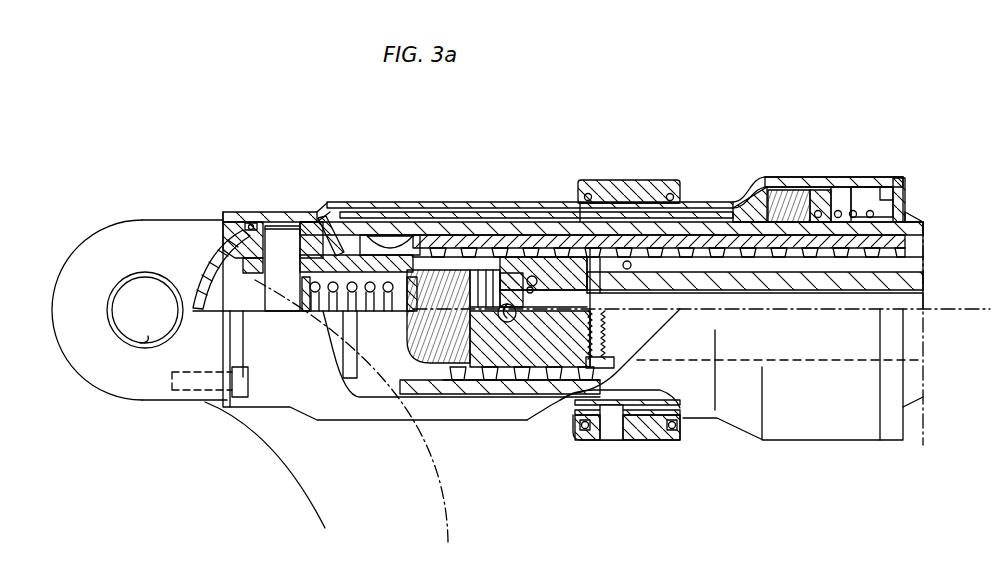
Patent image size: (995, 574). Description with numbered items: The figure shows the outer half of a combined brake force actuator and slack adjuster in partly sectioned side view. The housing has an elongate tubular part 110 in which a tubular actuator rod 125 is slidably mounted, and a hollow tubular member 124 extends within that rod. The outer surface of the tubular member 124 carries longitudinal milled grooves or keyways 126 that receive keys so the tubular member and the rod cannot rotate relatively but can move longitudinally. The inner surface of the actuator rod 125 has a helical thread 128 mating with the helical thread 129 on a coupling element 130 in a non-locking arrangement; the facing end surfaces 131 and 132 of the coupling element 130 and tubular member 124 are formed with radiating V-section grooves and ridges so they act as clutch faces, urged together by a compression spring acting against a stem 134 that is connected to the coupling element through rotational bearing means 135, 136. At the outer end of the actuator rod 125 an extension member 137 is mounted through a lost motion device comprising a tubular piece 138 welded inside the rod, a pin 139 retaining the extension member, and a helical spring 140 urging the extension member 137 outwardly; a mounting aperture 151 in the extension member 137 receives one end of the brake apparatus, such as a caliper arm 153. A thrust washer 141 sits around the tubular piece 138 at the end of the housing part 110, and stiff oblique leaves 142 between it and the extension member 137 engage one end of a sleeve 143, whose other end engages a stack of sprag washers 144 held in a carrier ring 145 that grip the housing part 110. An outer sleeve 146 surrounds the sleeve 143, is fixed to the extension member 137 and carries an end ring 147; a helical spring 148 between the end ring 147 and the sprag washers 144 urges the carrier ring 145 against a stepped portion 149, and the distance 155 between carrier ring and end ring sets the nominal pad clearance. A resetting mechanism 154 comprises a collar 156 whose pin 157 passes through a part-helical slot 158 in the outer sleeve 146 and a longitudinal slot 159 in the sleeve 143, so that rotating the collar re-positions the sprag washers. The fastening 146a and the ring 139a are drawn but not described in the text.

The elongate tubular part 110 is at (925, 223).
The hollow tubular member 124 is at (880, 283).
The tubular actuator rod 125 is at (572, 200).
The milled grooves or keyways 126 is at (817, 263).
The helical thread 128 is at (495, 225).
The mating helical thread 129 is at (540, 245).
The coupling element 130 is at (503, 382).
The end surface 131 is at (537, 400).
The end surface 132 is at (600, 350).
The stem 134 is at (767, 302).
The rotational bearing means 135 is at (497, 306).
The rotational bearing means 136 is at (603, 331).
The extension member 137 is at (95, 247).
The tubular piece 138 is at (390, 238).
The pin 139 is at (283, 242).
The sealing ring 139a is at (310, 207).
The helical spring 140 is at (380, 312).
The thrust washer 141 is at (340, 226).
The leaves 142 is at (331, 208).
The sleeve 143 is at (432, 204).
The sprag washers or shims 144 is at (772, 188).
The carrier ring 145 is at (778, 193).
The outer sleeve 146 is at (483, 207).
The locking screw 146a is at (248, 380).
The end ring 147 is at (907, 167).
The helical spring 148 is at (837, 216).
The stepped portion 149 is at (733, 200).
The mounting aperture 151 is at (143, 332).
The caliper arm 153 is at (298, 480).
The resetting mechanism 154 is at (634, 177).
The distance 155 is at (852, 170).
The collar 156 is at (598, 443).
The pin 157 is at (640, 455).
The oblique part-helical slot 158 is at (640, 200).
The longitudinal slot 159 is at (577, 440).